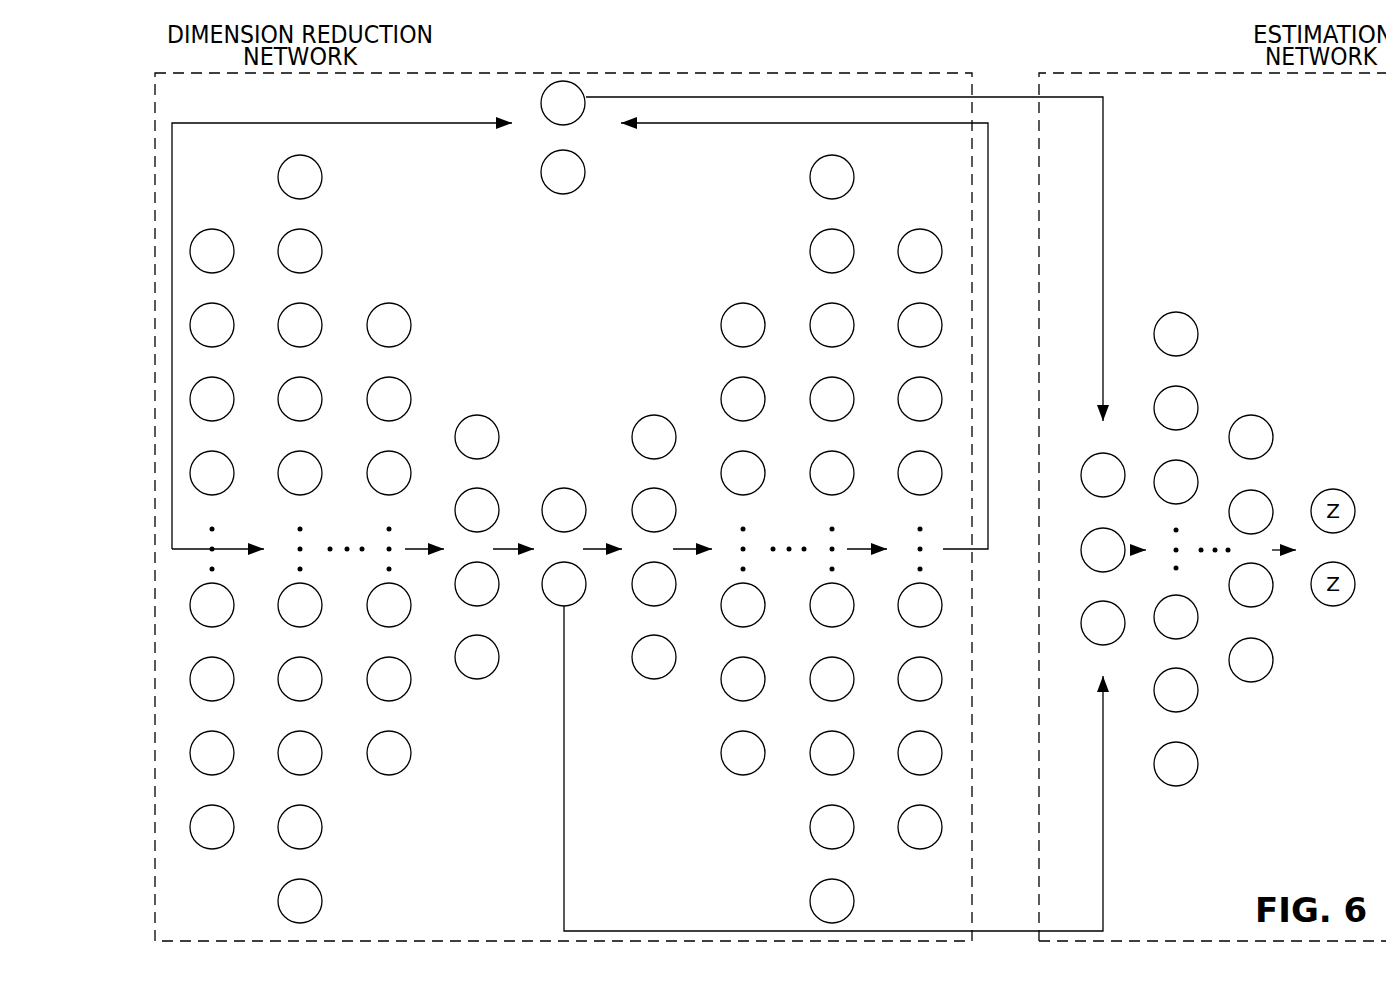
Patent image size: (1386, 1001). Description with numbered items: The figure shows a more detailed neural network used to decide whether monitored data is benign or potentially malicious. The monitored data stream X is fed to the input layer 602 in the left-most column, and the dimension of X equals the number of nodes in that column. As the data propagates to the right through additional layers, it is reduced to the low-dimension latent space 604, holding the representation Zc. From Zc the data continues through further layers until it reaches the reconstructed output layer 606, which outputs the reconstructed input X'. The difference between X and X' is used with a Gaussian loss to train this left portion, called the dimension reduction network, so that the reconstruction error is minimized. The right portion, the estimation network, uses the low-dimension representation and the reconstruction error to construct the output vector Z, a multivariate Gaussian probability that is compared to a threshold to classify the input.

The input layer 602 is at (212, 227).
The low-dimension latent space 604 is at (566, 487).
The reconstructed output layer 606 is at (920, 227).